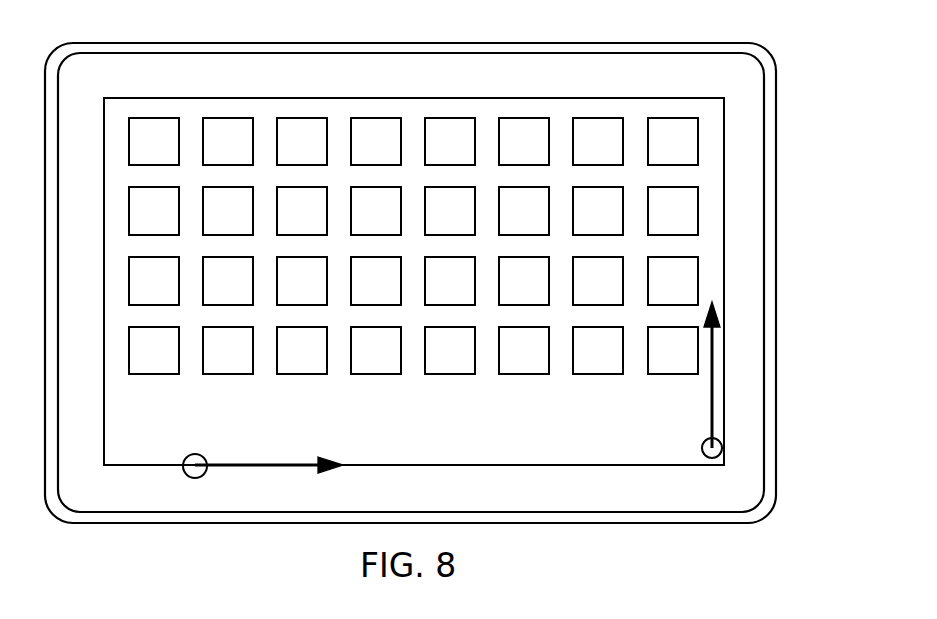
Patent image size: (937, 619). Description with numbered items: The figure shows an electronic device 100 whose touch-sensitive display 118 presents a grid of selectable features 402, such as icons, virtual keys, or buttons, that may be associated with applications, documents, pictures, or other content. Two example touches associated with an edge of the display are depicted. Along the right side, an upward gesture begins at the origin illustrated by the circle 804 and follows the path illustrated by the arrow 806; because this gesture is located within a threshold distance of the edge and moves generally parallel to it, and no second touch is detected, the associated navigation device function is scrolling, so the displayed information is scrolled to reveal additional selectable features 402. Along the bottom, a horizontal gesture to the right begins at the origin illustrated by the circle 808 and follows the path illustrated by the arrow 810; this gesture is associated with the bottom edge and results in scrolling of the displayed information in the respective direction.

The electronic device 100 is at (733, 556).
The touch-sensitive display 118 is at (765, 123).
The selectable features 402 is at (698, 210).
The circle 804 is at (722, 446).
The arrow 806 is at (715, 397).
The circle 808 is at (199, 478).
The arrow 810 is at (233, 468).